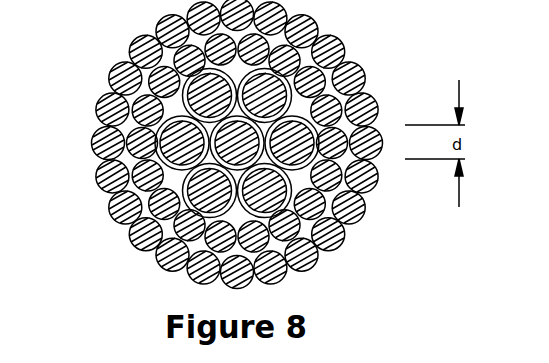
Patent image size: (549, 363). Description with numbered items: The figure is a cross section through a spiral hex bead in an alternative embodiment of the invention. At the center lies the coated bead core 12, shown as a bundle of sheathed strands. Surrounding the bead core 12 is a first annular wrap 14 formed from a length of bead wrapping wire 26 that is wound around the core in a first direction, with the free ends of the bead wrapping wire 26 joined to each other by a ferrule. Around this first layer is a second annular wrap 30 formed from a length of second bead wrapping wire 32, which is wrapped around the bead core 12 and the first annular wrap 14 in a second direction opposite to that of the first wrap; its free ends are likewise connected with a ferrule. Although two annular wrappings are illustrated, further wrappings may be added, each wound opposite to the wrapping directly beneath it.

The bead core 12 is at (166, 184).
The first annular wrap 14 is at (120, 141).
The bead wrapping wire 26 is at (330, 42).
The second annular wrap 30 is at (372, 228).
The second bead wrapping wire 32 is at (352, 72).